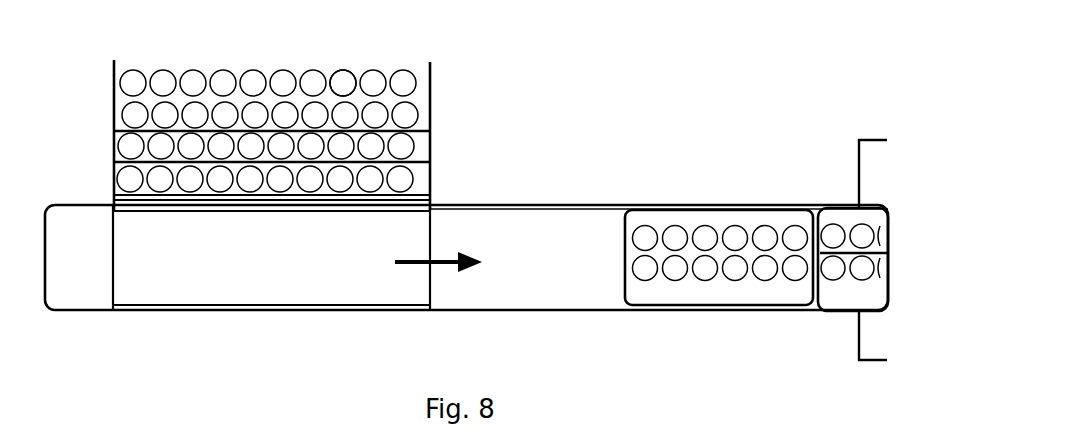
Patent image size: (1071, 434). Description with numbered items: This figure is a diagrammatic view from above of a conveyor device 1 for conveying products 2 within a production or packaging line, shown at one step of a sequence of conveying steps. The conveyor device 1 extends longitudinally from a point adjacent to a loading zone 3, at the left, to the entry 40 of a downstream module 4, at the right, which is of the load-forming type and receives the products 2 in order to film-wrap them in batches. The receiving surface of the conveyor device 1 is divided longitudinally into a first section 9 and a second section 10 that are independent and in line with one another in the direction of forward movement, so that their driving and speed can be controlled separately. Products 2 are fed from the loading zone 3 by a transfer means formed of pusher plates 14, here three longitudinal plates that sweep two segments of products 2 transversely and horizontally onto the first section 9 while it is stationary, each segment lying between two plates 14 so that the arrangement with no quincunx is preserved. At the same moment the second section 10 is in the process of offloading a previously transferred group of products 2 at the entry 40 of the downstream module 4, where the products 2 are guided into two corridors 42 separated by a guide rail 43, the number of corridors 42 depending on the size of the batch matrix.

The conveyor device 1 is at (519, 196).
The products 2 is at (349, 80).
The loading zone 3 is at (99, 67).
The downstream module 4 is at (851, 128).
The first section 9 is at (435, 322).
The second section 10 is at (810, 324).
The pusher plates 14 is at (425, 194).
The entry 40 is at (853, 213).
The corridors 42 is at (898, 210).
The guide rail 43 is at (866, 256).